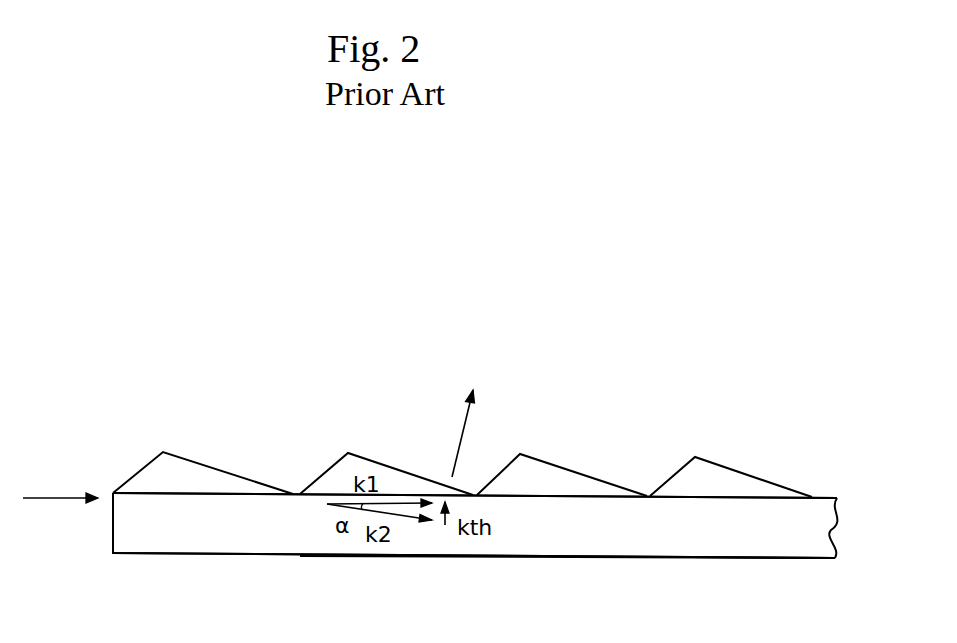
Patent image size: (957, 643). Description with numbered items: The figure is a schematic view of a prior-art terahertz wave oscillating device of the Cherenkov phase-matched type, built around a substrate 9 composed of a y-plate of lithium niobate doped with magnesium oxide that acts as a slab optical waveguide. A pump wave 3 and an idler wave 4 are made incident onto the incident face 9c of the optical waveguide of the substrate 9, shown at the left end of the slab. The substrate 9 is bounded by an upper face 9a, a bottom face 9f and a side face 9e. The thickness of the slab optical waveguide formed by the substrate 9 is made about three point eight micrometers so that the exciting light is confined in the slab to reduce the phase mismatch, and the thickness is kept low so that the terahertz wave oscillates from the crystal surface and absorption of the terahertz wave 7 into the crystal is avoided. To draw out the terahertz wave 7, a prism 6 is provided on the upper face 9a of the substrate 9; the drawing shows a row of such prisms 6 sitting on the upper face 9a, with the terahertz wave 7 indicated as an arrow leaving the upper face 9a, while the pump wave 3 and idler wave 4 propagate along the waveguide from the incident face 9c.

The pump wave 3 is at (60, 469).
The idler wave 4 is at (50, 497).
The prism 6 is at (210, 477).
The terahertz wave 7 is at (462, 430).
The substrate 9 is at (828, 538).
The upper face 9a is at (597, 495).
The incident face 9c is at (113, 543).
The side face 9e is at (653, 540).
The bottom face 9f is at (468, 556).